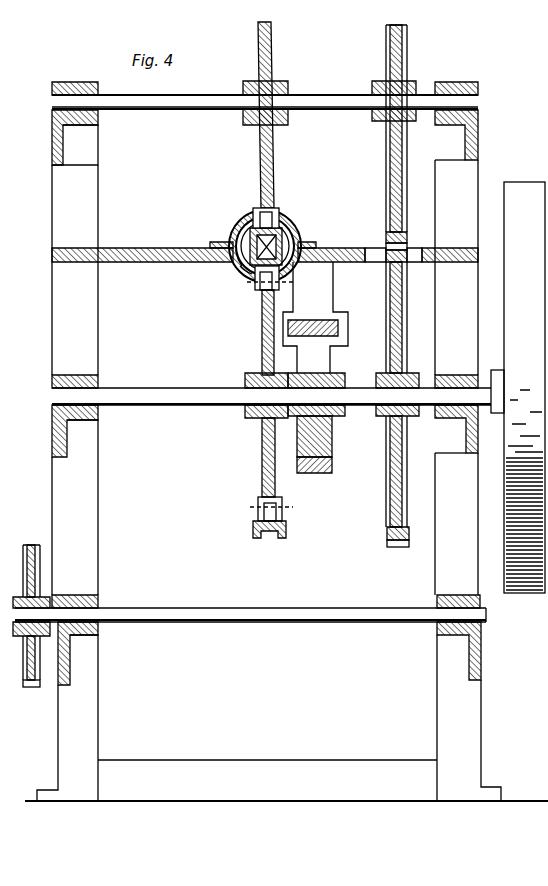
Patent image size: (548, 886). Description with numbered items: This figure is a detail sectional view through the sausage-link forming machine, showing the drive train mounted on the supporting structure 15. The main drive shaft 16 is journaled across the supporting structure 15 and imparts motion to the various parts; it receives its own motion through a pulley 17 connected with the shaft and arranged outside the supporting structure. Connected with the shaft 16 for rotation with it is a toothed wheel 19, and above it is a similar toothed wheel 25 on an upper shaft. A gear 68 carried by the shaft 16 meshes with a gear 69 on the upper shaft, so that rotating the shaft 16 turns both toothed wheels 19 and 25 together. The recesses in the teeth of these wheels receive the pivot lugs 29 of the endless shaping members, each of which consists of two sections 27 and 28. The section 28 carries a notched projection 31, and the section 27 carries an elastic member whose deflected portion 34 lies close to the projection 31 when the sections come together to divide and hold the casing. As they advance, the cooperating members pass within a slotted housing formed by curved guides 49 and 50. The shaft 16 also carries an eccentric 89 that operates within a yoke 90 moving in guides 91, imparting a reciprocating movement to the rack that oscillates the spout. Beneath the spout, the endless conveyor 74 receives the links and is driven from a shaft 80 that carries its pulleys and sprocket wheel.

The supporting structure 15 is at (52, 260).
The main drive shaft 16 is at (163, 397).
The pulley 17 is at (514, 182).
The toothed wheel 19 is at (262, 350).
The toothed wheel 25 is at (275, 150).
The shaping member section 27 is at (232, 230).
The shaping member section 28 is at (236, 264).
The lug 29 is at (272, 208).
The projection 31 is at (242, 266).
The deflected portion 34 is at (298, 231).
The guide 49 is at (246, 218).
The guide 50 is at (280, 226).
The gear 68 is at (408, 495).
The gear 69 is at (407, 178).
The endless conveyor 74 is at (29, 546).
The shaft 80 is at (163, 615).
The eccentric 89 is at (330, 441).
The yoke 90 is at (325, 360).
The guides 91 is at (328, 303).